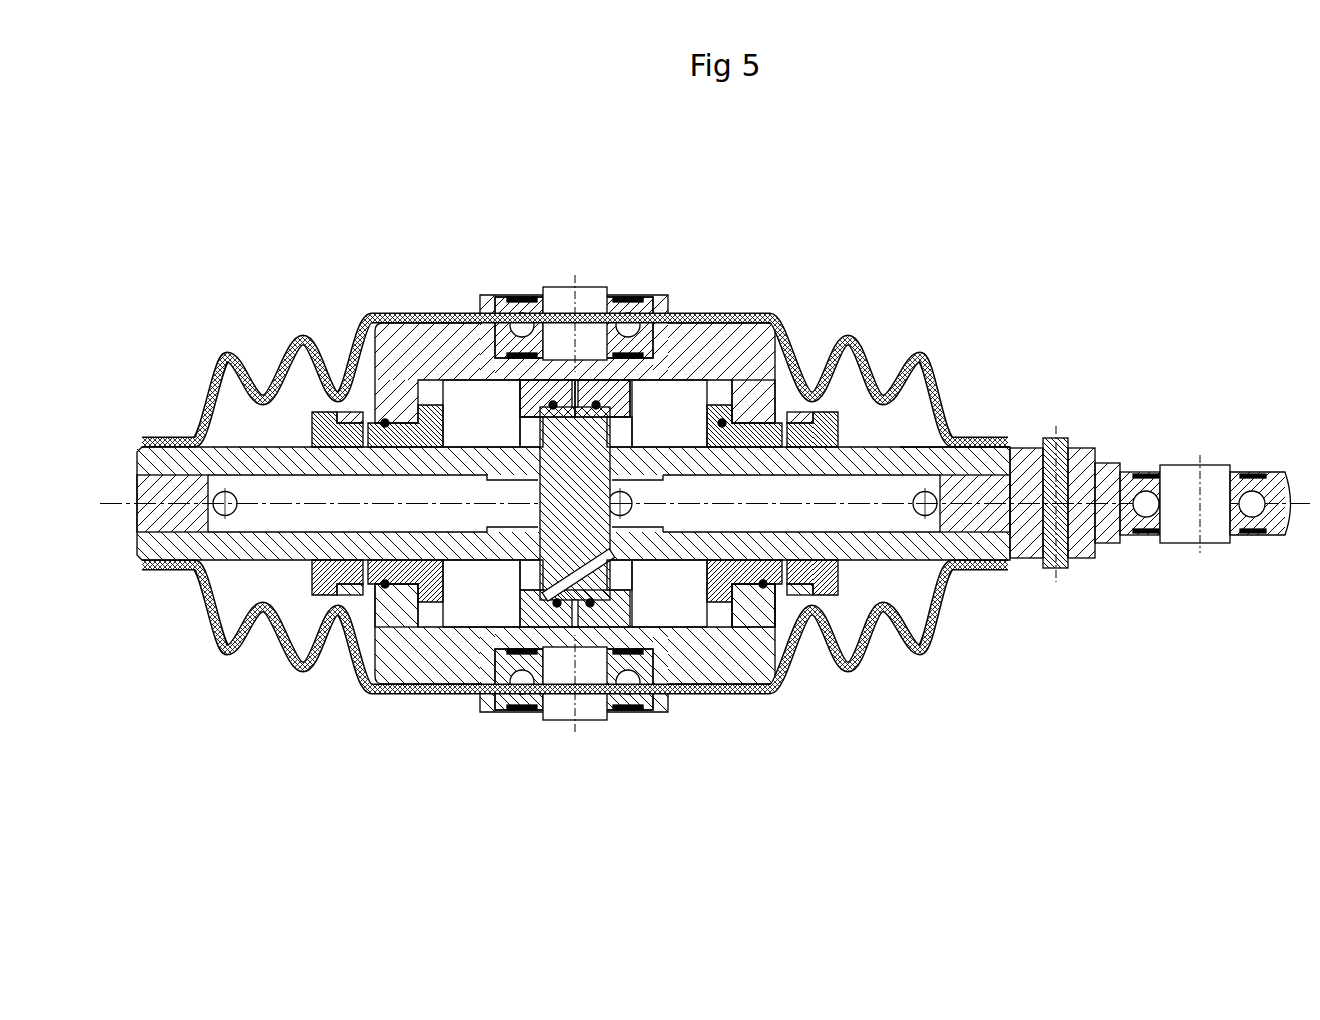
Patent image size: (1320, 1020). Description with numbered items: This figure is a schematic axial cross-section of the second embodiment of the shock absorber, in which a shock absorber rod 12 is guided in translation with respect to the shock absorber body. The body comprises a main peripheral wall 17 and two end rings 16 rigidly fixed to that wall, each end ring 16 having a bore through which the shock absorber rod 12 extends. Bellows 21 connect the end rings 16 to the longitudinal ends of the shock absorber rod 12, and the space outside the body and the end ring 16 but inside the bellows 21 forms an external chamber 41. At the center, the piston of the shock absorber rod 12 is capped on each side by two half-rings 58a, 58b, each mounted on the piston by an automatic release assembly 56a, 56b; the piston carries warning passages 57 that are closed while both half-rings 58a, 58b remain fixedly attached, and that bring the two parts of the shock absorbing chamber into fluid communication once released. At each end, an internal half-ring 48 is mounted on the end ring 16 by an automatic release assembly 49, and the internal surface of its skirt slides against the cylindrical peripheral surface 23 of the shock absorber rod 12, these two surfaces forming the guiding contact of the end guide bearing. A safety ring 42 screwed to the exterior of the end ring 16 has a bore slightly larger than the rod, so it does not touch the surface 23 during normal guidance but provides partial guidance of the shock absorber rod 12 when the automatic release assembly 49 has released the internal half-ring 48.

The shock absorber rod 12 is at (1090, 523).
The end ring 16 is at (393, 660).
The main peripheral wall 17 is at (678, 660).
The bellows 21 is at (935, 395).
The cylindrical peripheral surface 23 is at (237, 447).
The external chamber 41 is at (922, 408).
The safety ring 42 is at (323, 587).
The internal half-ring 48 is at (722, 423).
The automatic release assembly 49 is at (385, 423).
The automatic release assembly 56a is at (556, 405).
The automatic release assembly 56b is at (596, 405).
The warning passages 57 is at (573, 593).
The half-ring 58a is at (530, 712).
The half-ring 58b is at (620, 710).